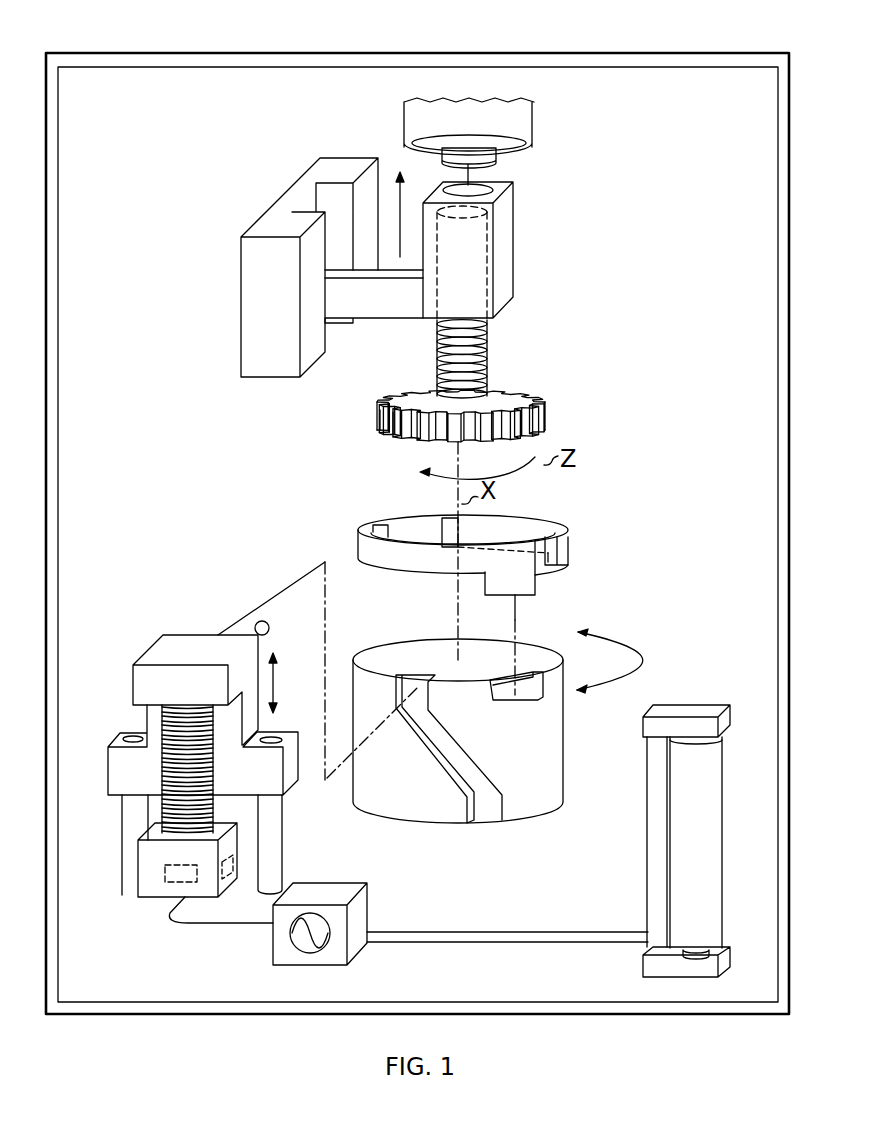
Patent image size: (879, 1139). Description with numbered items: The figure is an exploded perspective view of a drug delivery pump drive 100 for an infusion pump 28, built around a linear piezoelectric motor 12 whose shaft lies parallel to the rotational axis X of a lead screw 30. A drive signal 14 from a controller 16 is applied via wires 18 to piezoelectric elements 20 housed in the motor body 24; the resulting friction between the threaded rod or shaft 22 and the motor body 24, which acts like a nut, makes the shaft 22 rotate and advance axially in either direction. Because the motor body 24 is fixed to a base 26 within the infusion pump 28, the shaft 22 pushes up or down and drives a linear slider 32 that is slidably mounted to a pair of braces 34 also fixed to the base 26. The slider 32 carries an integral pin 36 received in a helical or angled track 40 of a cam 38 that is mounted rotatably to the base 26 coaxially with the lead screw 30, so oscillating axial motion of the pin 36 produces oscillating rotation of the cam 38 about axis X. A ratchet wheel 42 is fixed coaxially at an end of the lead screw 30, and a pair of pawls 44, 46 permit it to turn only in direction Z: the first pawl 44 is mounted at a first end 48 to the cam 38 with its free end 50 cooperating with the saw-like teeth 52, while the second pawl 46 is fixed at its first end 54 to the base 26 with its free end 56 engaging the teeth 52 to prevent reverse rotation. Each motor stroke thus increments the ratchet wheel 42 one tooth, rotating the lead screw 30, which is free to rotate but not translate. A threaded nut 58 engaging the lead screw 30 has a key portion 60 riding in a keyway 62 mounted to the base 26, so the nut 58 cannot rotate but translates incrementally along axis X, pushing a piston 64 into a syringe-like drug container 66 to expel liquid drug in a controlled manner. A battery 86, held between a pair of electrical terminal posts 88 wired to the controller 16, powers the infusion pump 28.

The drug delivery pump drive 100 is at (185, 153).
The infusion pump 28 is at (166, 53).
The linear piezoelectric motor 12 is at (142, 878).
The drive signal 14 is at (312, 951).
The controller 16 is at (370, 915).
The wires 18 is at (237, 924).
The piezoelectric elements 20 is at (233, 865).
The threaded rod or shaft 22 is at (160, 730).
The motor body 24 is at (148, 832).
The base 26 is at (84, 979).
The lead screw 30 is at (488, 354).
The linear slider 32 is at (189, 642).
The braces 34 is at (120, 858).
The pin 36 is at (254, 621).
The cam 38 is at (388, 652).
The track 40 is at (487, 812).
The ratchet wheel 42 is at (551, 416).
The first pawl 44 is at (350, 546).
The second pawl 46 is at (576, 549).
The first end 48 is at (534, 584).
The free end 50 is at (380, 524).
The teeth 52 is at (378, 427).
The first end 54 is at (440, 530).
The free end 56 is at (562, 559).
The threaded nut 58 is at (514, 255).
The key portion 60 is at (380, 314).
The keyway 62 is at (257, 226).
The piston 64 is at (501, 159).
The drug container 66 is at (541, 123).
The battery 86 is at (684, 848).
The electrical terminal posts 88 is at (690, 710).